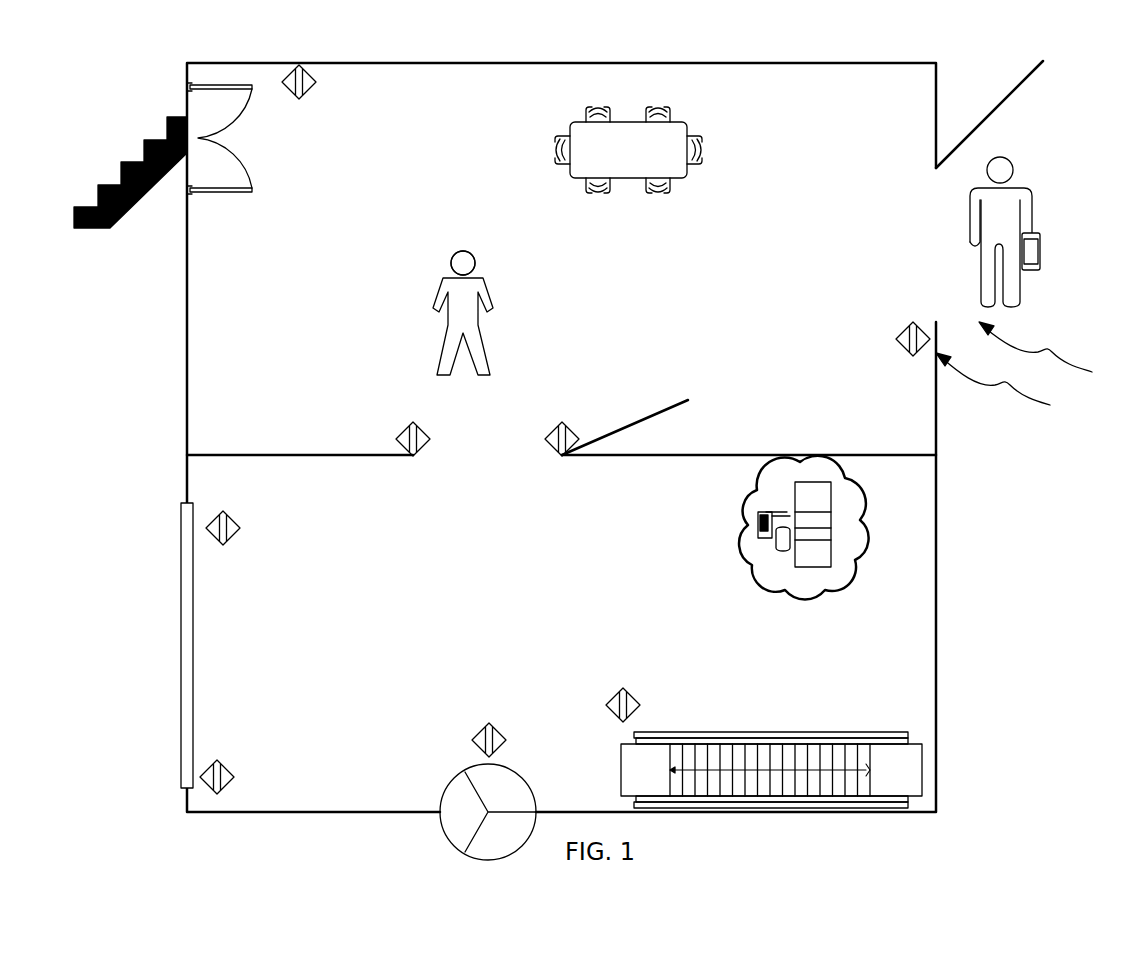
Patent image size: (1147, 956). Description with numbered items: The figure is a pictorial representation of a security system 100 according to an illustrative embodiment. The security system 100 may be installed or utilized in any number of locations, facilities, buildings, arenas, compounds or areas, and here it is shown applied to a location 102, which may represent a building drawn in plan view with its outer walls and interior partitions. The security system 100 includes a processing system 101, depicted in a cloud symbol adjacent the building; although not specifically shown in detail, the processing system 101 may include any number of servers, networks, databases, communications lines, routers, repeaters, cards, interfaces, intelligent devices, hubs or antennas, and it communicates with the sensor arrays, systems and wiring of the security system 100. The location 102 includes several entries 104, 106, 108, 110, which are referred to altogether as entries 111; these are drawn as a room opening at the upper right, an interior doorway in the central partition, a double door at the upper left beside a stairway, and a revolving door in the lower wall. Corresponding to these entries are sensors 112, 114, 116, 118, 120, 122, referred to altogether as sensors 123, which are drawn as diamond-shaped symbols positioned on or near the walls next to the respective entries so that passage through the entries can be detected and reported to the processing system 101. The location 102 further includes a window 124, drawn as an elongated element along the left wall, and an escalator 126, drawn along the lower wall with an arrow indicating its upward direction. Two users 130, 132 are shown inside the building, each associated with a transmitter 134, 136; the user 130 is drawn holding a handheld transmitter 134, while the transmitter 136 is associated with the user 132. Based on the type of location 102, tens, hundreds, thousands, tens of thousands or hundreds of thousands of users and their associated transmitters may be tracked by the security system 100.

The security system 100 is at (943, 678).
The processing system 101 is at (858, 562).
The location 102 is at (497, 163).
The entry 104 is at (941, 261).
The entry 106 is at (504, 463).
The entry 108 is at (261, 150).
The entry 110 is at (517, 806).
The entries 111 is at (1054, 353).
The sensor 112 is at (610, 682).
The sensor 114 is at (896, 338).
The sensor 116 is at (402, 418).
The sensor 118 is at (290, 66).
The sensor 120 is at (462, 735).
The sensor 122 is at (240, 528).
The sensors 123 is at (1011, 384).
The window 124 is at (190, 623).
The escalator 126 is at (905, 780).
The user 130 is at (1011, 168).
The user 132 is at (490, 297).
The transmitter 134 is at (1035, 250).
The transmitter 136 is at (467, 262).